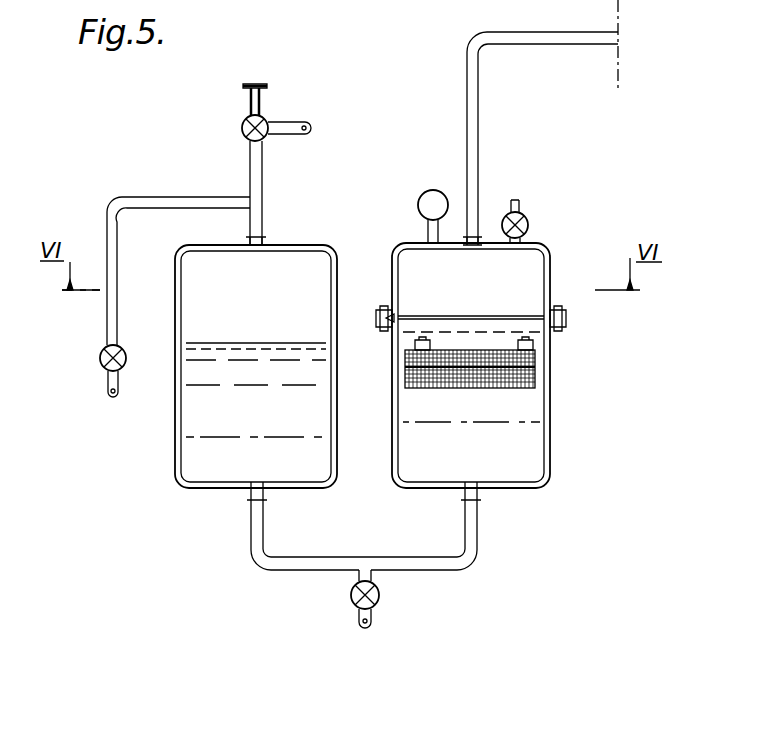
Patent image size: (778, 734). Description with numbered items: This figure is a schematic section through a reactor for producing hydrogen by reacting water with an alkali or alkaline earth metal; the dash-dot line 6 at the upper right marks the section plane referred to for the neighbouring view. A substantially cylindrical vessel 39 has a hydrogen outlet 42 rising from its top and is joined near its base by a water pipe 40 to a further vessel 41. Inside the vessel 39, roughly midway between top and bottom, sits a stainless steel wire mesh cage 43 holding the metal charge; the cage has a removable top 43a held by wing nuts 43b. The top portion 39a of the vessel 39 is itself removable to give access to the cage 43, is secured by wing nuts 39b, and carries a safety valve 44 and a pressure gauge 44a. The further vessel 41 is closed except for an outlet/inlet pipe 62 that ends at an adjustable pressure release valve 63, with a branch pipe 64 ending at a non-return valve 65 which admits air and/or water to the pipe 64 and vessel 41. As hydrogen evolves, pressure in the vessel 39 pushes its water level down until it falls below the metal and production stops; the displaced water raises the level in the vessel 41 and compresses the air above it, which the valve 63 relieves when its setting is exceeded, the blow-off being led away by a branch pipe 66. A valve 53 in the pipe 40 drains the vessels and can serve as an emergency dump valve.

The tank wall / connection line 6 is at (617, 88).
The vessel 39 is at (550, 455).
The top portion 39a is at (552, 252).
The wing nuts 39b is at (380, 308).
The water pipe 40 is at (475, 556).
The further vessel 41 is at (200, 488).
The hydrogen outlet 42 is at (480, 150).
The stainless steel wire mesh cage 43 is at (535, 388).
The removable top 43a is at (540, 364).
The wing nuts 43b is at (412, 348).
The safety valve 44 is at (525, 222).
The pressure gauge 44a is at (433, 190).
The valve 53 is at (380, 597).
The outlet/inlet pipe 62 is at (258, 215).
The adjustable pressure release valve 63 is at (244, 120).
The branch pipe 64 is at (112, 222).
The non-return valve 65 is at (103, 364).
The branch pipe 66 is at (295, 126).